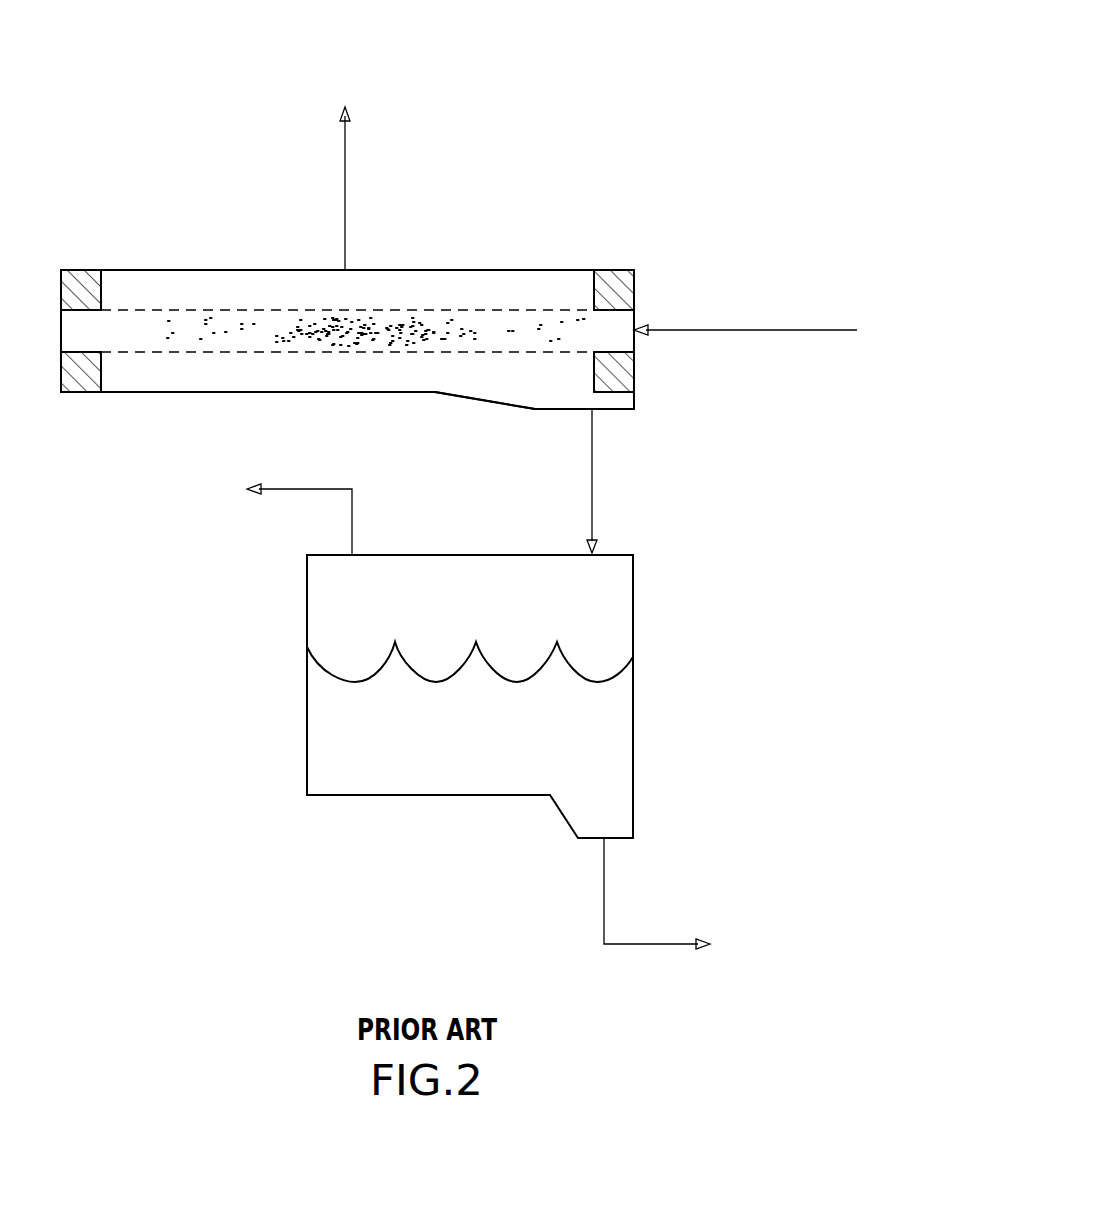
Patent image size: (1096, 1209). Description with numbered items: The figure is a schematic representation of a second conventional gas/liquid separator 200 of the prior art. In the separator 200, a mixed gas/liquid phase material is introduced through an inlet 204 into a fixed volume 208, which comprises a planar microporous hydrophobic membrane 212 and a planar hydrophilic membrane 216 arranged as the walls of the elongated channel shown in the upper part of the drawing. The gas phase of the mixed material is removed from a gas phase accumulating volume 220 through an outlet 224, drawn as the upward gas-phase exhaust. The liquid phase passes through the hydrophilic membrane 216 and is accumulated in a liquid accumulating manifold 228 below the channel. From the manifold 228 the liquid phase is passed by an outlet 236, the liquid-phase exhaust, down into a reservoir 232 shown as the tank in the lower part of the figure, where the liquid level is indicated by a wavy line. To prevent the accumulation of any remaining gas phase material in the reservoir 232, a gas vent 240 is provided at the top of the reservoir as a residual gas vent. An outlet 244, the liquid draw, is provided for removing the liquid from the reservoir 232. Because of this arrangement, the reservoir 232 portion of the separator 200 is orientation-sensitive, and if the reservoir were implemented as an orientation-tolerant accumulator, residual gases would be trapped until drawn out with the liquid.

The gas/liquid separator 200 is at (633, 98).
The inlet 204 is at (773, 330).
The fixed volume 208 is at (549, 330).
The planar microporous hydrophobic membrane 212 is at (249, 270).
The planar hydrophilic membrane 216 is at (195, 392).
The gas phase accumulating volume 220 is at (498, 285).
The outlet 224 is at (345, 270).
The liquid accumulating manifold 228 is at (435, 392).
The reservoir 232 is at (633, 752).
The outlet 236 is at (592, 510).
The gas vent 240 is at (352, 514).
The outlet 244 is at (604, 863).